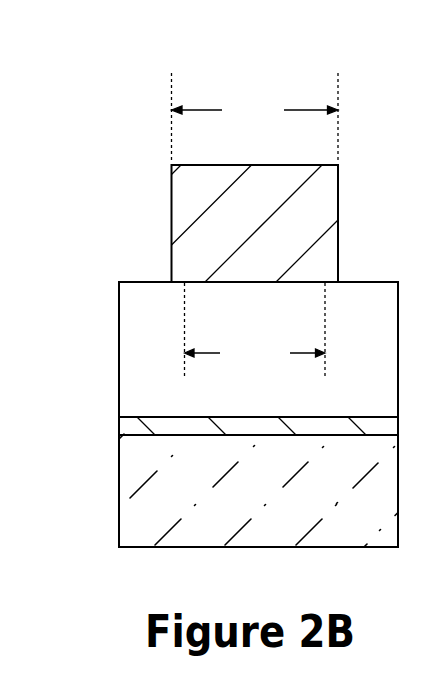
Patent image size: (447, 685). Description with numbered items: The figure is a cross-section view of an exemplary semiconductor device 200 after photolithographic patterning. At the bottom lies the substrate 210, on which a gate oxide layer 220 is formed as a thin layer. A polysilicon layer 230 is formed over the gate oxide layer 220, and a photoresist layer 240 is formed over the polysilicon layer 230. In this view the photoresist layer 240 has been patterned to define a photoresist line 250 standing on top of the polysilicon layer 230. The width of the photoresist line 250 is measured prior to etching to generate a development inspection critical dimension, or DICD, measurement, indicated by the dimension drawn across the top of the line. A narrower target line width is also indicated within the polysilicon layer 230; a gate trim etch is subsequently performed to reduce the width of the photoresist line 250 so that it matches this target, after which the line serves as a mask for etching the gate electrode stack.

The semiconductor device 200 is at (102, 73).
The substrate 210 is at (117, 513).
The gate oxide layer 220 is at (117, 429).
The polysilicon layer 230 is at (117, 358).
The photoresist layer 240 is at (171, 252).
The photoresist line 250 is at (348, 237).